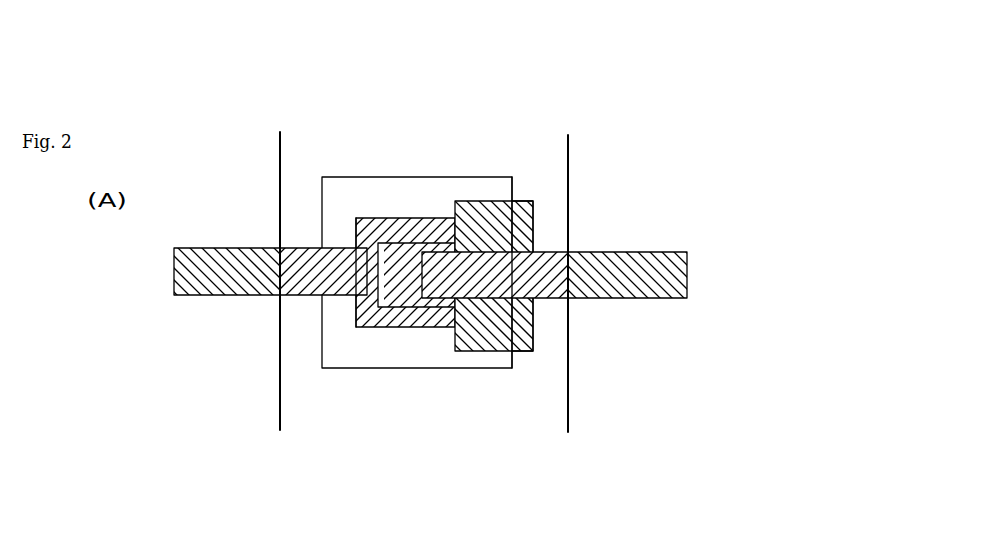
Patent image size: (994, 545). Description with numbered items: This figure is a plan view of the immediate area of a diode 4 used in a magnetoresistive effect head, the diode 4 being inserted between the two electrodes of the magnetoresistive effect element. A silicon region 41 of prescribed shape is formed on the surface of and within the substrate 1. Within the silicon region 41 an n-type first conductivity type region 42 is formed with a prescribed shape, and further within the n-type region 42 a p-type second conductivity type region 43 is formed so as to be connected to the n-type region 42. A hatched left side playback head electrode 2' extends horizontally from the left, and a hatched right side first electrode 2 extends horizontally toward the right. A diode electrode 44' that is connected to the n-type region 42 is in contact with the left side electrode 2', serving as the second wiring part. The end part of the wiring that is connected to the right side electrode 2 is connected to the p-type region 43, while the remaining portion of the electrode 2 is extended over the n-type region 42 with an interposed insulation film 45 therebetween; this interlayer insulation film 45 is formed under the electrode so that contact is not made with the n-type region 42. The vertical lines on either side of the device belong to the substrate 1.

The substrate 1 is at (557, 373).
The first electrode 2 is at (429, 268).
The second electrode 2' is at (429, 216).
The diode 4 is at (447, 260).
The silicon region layer 41 is at (415, 197).
The first conductivity type region 42 is at (372, 218).
The second conductivity type region 43 is at (402, 302).
The second wiring part 44' is at (429, 335).
The insulation film 45 is at (533, 202).